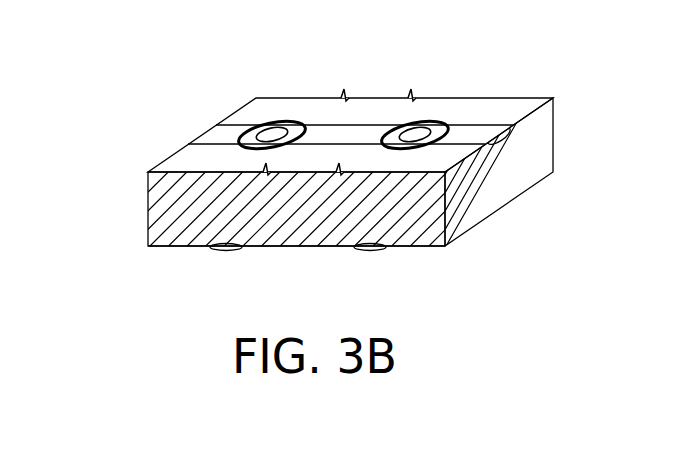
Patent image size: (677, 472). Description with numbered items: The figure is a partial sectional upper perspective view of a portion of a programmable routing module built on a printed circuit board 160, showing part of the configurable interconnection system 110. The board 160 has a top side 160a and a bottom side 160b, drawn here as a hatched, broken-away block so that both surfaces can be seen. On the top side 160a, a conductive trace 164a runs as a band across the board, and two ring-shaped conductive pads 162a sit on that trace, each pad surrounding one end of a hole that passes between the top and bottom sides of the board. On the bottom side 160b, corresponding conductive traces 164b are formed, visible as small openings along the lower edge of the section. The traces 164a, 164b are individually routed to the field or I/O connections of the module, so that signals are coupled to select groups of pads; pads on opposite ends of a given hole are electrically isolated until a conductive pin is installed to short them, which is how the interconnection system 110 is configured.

The interconnection system 110 is at (120, 53).
The printed circuit board 160 is at (549, 121).
The top side 160a is at (257, 104).
The bottom side 160b is at (432, 264).
The conductive pads 162a is at (292, 122).
The conductive traces 164a is at (218, 134).
The conductive traces 164b is at (222, 249).